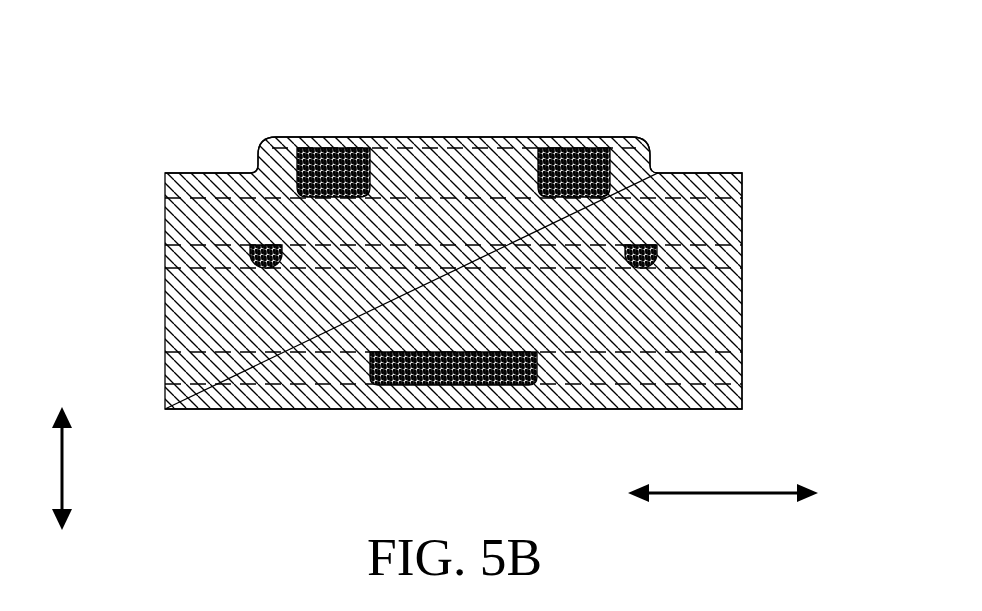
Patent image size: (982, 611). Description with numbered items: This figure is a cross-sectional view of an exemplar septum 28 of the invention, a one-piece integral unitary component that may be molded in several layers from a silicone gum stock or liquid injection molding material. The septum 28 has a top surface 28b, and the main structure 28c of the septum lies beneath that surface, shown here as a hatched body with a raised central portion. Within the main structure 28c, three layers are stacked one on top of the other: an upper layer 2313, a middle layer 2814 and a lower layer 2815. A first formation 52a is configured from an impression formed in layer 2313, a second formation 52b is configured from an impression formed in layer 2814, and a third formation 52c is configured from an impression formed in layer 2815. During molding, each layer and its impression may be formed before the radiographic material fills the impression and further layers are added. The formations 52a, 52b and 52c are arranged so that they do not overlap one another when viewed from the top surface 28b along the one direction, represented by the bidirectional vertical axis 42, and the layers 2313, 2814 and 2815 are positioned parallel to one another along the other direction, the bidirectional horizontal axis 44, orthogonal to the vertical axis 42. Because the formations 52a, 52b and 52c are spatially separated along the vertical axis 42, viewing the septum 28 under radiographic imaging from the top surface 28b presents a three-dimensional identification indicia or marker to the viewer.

The septum 28 is at (76, 112).
The top surface 28b is at (423, 138).
The main structure 28c is at (165, 303).
The layer 2313 is at (474, 147).
The layer 2814 is at (388, 255).
The layer 2815 is at (512, 387).
The first formation 52a is at (313, 148).
The second formation 52b is at (262, 245).
The third formation 52c is at (432, 386).
The vertical axis 42 is at (62, 442).
The horizontal axis 44 is at (730, 495).